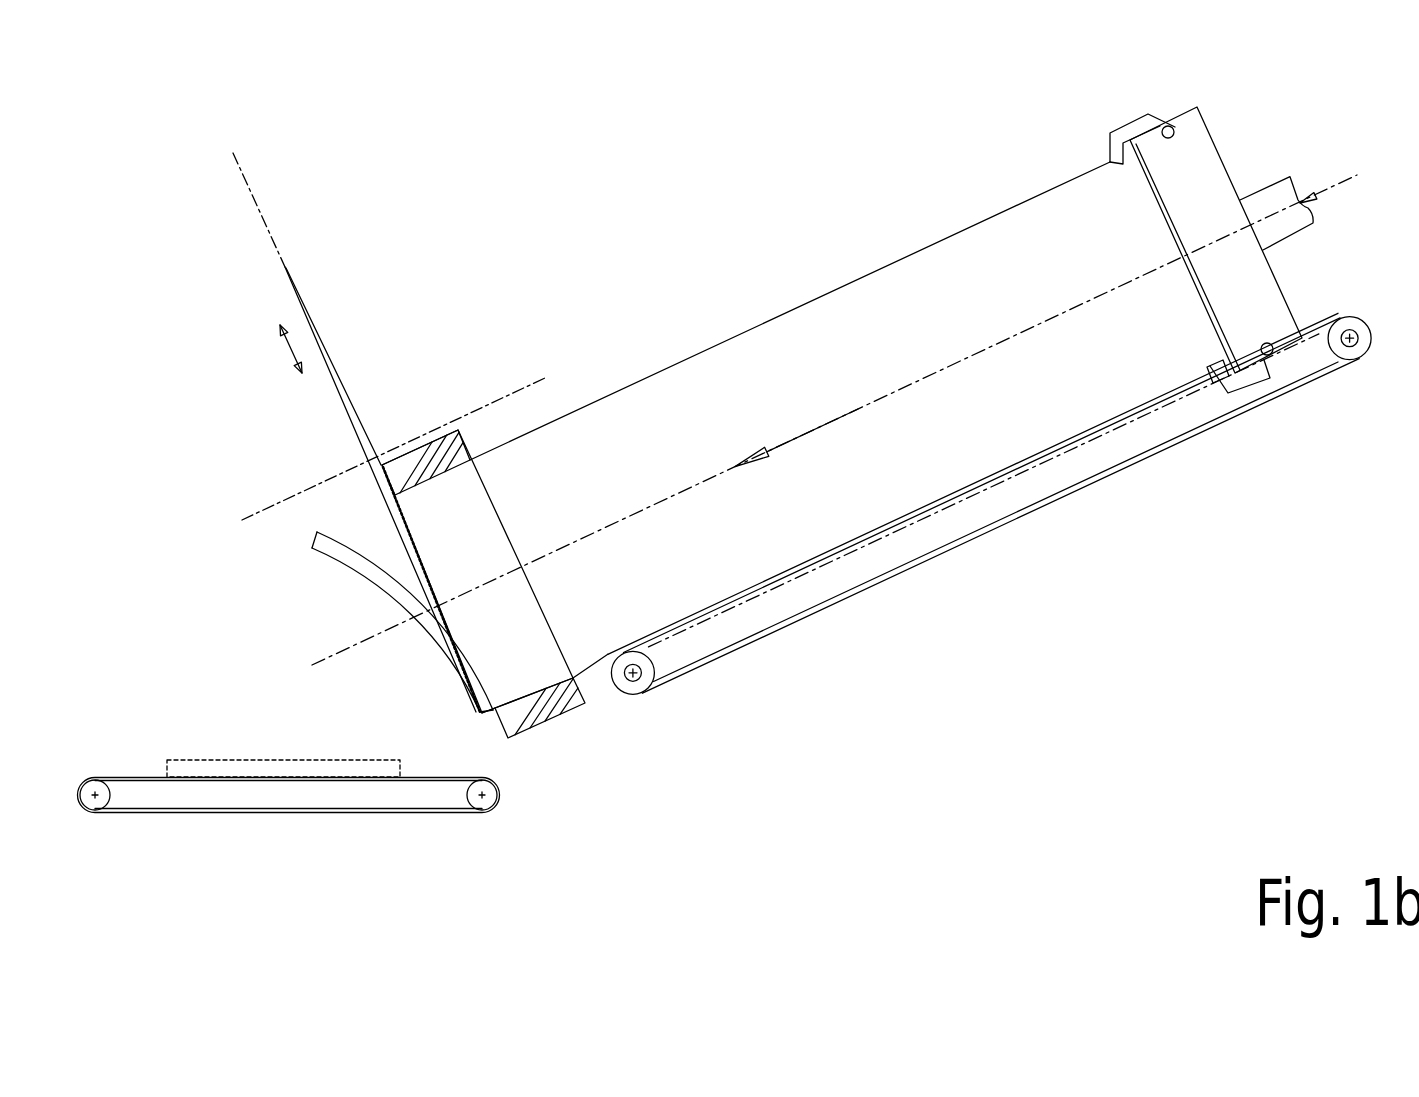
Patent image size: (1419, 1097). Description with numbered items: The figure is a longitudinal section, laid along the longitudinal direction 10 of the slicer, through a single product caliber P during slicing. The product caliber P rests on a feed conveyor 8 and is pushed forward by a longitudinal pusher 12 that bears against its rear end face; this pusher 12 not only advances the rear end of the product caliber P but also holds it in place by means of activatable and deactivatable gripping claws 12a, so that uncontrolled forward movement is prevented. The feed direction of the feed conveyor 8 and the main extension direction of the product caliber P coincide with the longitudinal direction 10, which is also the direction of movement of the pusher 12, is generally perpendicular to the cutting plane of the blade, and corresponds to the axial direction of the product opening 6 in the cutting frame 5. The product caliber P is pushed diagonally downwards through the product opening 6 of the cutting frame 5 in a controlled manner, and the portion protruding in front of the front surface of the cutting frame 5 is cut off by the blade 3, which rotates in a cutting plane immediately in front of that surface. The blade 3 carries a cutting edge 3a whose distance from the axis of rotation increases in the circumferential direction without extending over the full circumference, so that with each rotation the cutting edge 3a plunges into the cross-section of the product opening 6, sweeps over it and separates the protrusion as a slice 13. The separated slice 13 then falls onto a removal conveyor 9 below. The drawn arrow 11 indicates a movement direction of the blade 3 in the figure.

The blade 3 is at (305, 315).
The cutting edge 3a is at (462, 637).
The cutting frame 5 is at (415, 450).
The product opening 6 is at (472, 458).
The feed conveyor 8 is at (989, 503).
The removal conveyor 9 is at (272, 812).
The longitudinal direction 10 is at (829, 443).
The blade oscillation direction 11 is at (290, 347).
The longitudinal pusher 12 is at (1223, 250).
The gripping claws 12a is at (1135, 127).
The slice 13 is at (335, 552).
The product caliber P is at (790, 420).